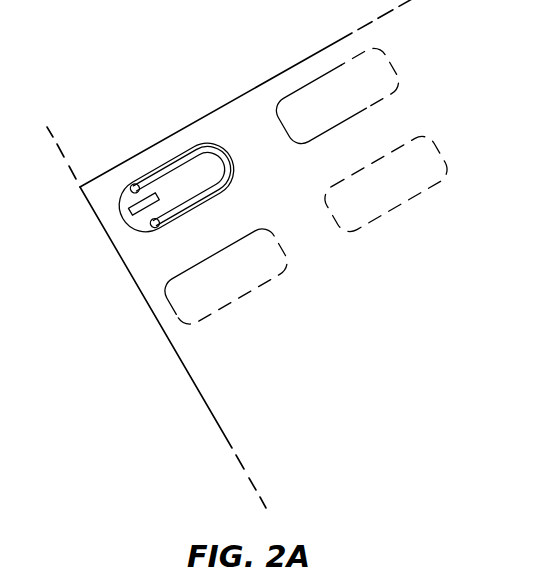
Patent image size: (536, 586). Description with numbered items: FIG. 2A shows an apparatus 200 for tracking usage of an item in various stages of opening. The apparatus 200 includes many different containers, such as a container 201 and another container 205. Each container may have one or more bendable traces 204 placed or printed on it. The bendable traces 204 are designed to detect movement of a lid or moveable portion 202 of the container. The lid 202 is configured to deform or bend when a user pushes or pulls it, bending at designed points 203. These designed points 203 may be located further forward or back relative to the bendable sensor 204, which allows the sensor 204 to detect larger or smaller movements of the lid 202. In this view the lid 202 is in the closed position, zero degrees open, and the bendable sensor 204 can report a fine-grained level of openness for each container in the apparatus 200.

The apparatus 200 is at (145, 302).
The container 201 is at (182, 148).
The lid 202 is at (213, 189).
The designed points 203 is at (133, 182).
The bendable trace 204 is at (125, 212).
The container 205 is at (283, 108).